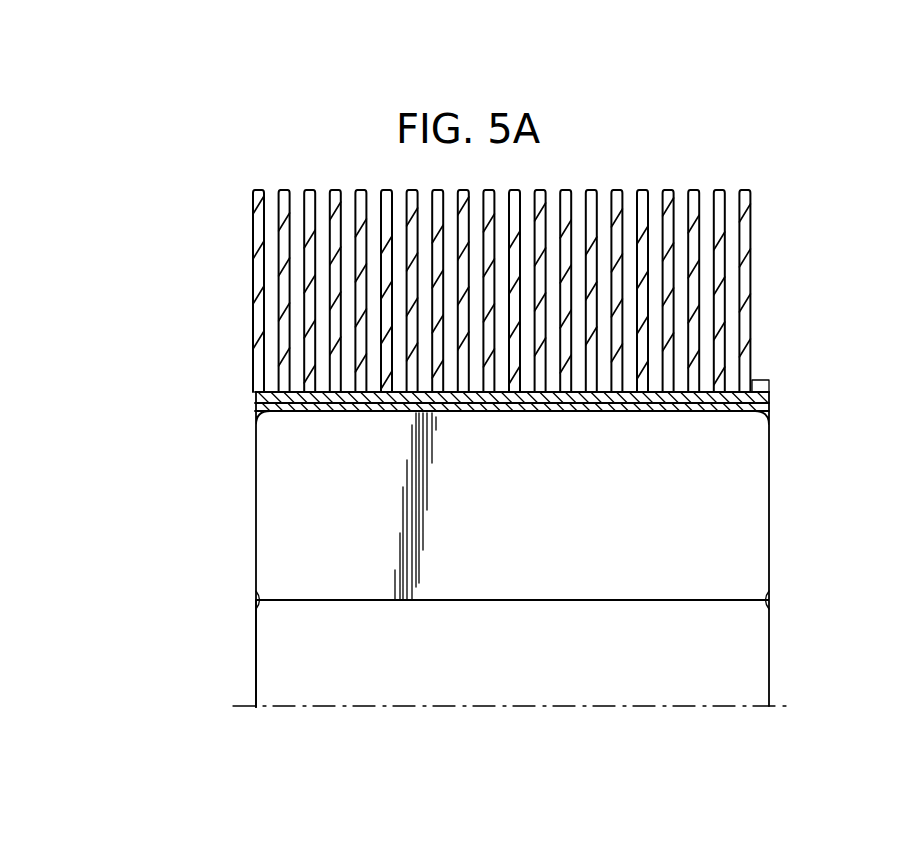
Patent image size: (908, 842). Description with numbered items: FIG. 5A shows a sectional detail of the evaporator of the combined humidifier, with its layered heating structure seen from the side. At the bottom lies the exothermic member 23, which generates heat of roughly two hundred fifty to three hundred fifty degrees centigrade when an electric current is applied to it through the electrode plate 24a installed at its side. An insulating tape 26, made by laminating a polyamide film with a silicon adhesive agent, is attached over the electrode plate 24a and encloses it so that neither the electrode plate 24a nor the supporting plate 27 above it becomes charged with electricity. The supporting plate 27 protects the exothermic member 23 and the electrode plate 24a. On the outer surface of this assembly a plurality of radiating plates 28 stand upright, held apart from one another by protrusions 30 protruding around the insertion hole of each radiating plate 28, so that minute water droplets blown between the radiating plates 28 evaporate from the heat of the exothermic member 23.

The radiating plates 28 is at (748, 318).
The supporting plate 27 is at (255, 393).
The protrusions 30 is at (765, 375).
The insulating tape 26 is at (318, 412).
The exothermic member 23 is at (757, 503).
The electrode plate 24a is at (256, 600).